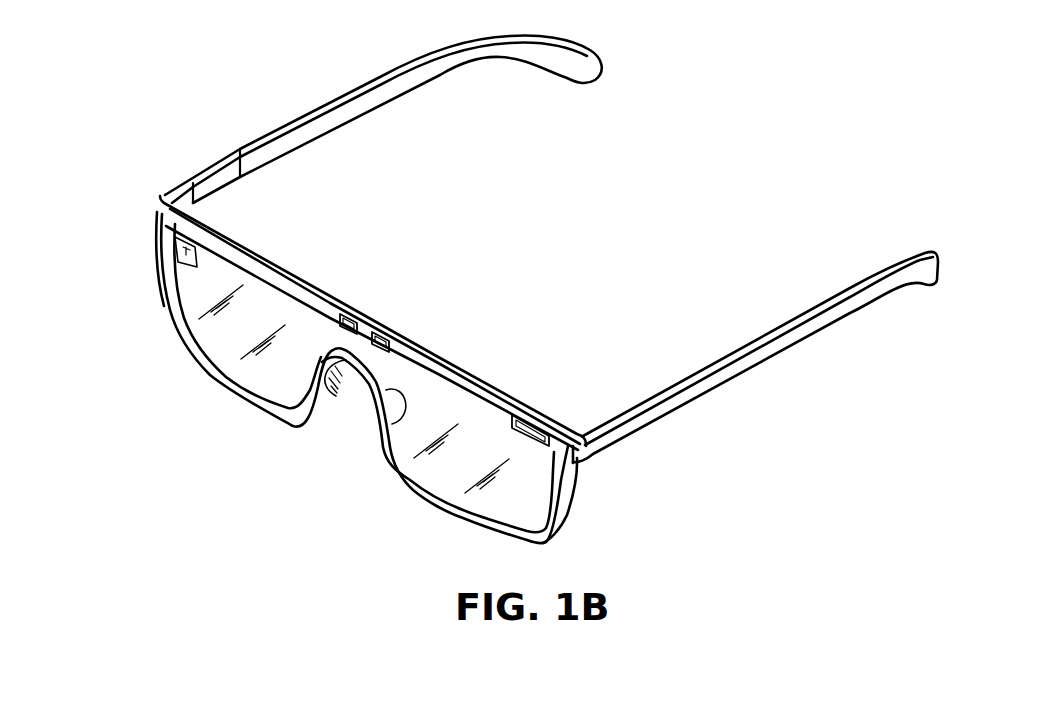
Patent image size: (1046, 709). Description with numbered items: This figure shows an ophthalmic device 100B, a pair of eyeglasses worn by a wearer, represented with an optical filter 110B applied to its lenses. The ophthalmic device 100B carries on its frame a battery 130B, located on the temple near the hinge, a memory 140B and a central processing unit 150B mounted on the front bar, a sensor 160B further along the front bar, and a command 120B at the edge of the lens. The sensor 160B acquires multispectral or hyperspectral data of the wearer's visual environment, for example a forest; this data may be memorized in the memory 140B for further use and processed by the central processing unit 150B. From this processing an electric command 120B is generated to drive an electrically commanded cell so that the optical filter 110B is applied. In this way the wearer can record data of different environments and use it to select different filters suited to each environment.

The ophthalmic device 100B is at (892, 262).
The optical filter 110B is at (263, 362).
The command 120B is at (163, 233).
The battery 130B is at (212, 167).
The memory 140B is at (350, 312).
The central processing unit 150B is at (387, 333).
The sensor 160B is at (535, 417).